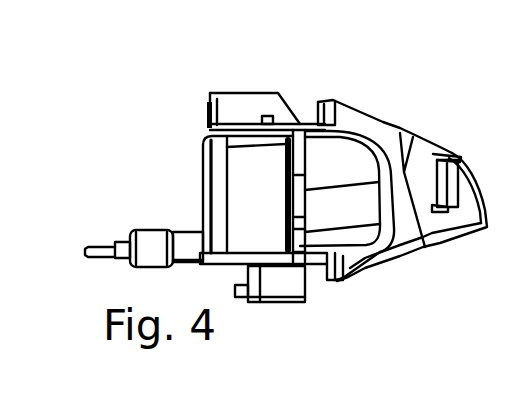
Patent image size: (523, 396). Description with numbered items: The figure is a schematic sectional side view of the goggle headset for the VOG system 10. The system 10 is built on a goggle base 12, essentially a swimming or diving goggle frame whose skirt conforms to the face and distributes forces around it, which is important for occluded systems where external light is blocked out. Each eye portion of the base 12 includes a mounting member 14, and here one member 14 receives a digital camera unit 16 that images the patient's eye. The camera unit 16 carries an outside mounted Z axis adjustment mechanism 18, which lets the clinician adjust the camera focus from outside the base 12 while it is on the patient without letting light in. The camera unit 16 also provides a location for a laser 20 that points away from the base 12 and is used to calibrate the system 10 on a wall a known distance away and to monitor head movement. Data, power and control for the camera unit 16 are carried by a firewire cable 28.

The VOG system 10 is at (159, 98).
The goggle base 12 is at (402, 143).
The mounting member 14 is at (343, 170).
The digital camera unit 16 is at (252, 198).
The Z axis adjustment mechanism 18 is at (273, 307).
The laser 20 is at (245, 116).
The firewire cable 28 is at (96, 246).